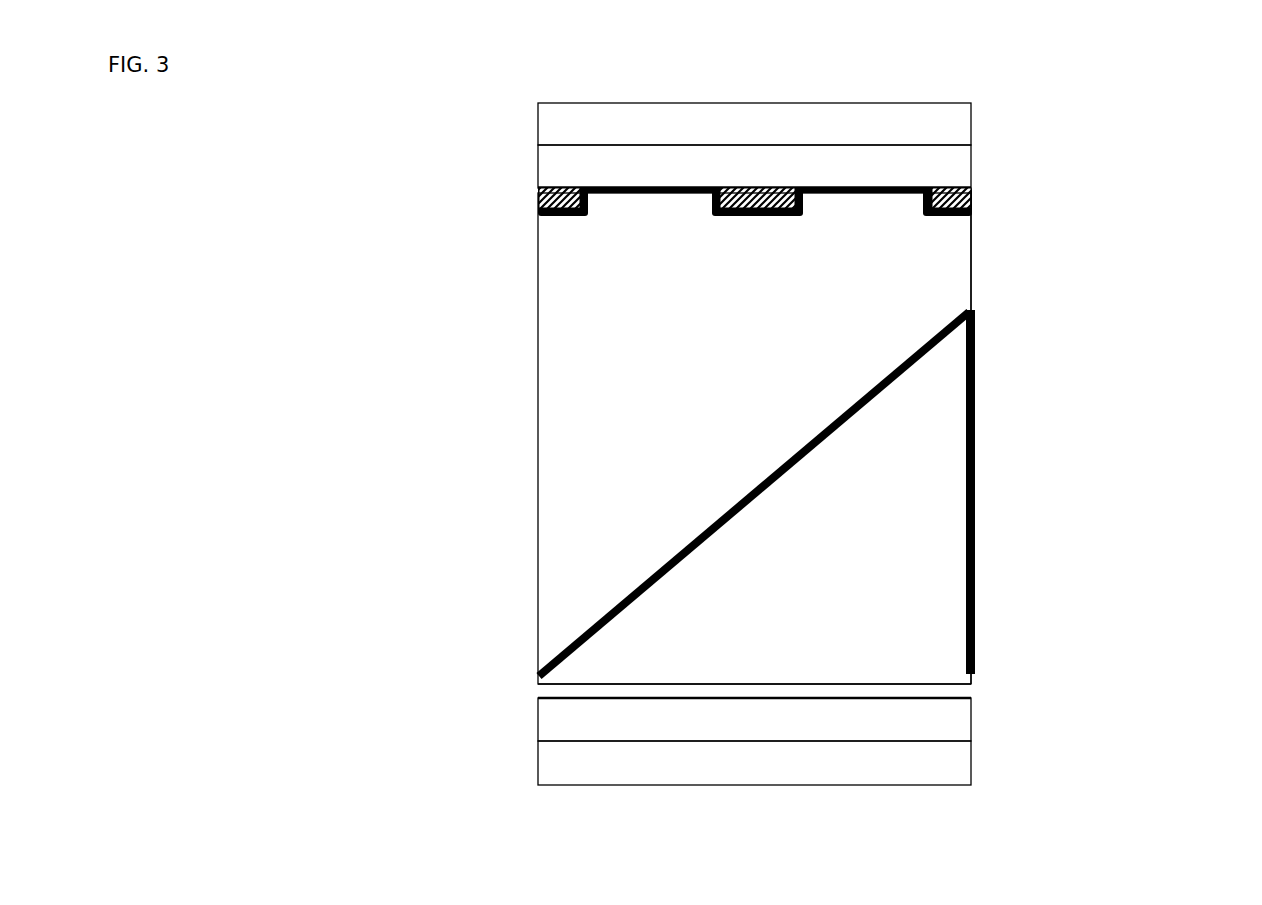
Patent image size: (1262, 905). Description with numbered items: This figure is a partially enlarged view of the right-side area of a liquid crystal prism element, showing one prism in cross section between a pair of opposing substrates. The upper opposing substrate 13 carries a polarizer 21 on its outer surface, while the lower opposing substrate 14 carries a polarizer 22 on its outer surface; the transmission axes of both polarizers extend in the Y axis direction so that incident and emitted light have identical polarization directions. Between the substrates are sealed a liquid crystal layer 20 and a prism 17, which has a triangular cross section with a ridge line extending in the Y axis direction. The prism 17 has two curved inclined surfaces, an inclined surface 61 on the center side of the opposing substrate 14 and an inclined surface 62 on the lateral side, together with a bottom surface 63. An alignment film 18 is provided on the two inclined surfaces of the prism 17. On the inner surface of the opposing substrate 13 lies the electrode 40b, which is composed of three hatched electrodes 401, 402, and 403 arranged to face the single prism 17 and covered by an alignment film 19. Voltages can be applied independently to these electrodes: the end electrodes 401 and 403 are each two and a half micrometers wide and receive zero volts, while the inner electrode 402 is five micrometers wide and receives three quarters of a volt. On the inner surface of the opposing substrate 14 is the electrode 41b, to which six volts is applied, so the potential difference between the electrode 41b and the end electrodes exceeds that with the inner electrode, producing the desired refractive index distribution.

The polarizer 21 is at (958, 128).
The opposing substrate 13 is at (962, 168).
The alignment film 19 is at (955, 218).
The electrode 401 is at (562, 186).
The electrode 402 is at (755, 186).
The electrode 403 is at (947, 186).
The electrode 40b is at (534, 198).
The liquid crystal layer 20 is at (553, 477).
The inclined surface 61 is at (621, 596).
The inclined surface 62 is at (974, 525).
The alignment film 18 is at (975, 583).
The prism 17 is at (908, 637).
The electrode 41b is at (535, 685).
The bottom surface 63 is at (748, 689).
The opposing substrate 14 is at (952, 716).
The polarizer 22 is at (952, 768).